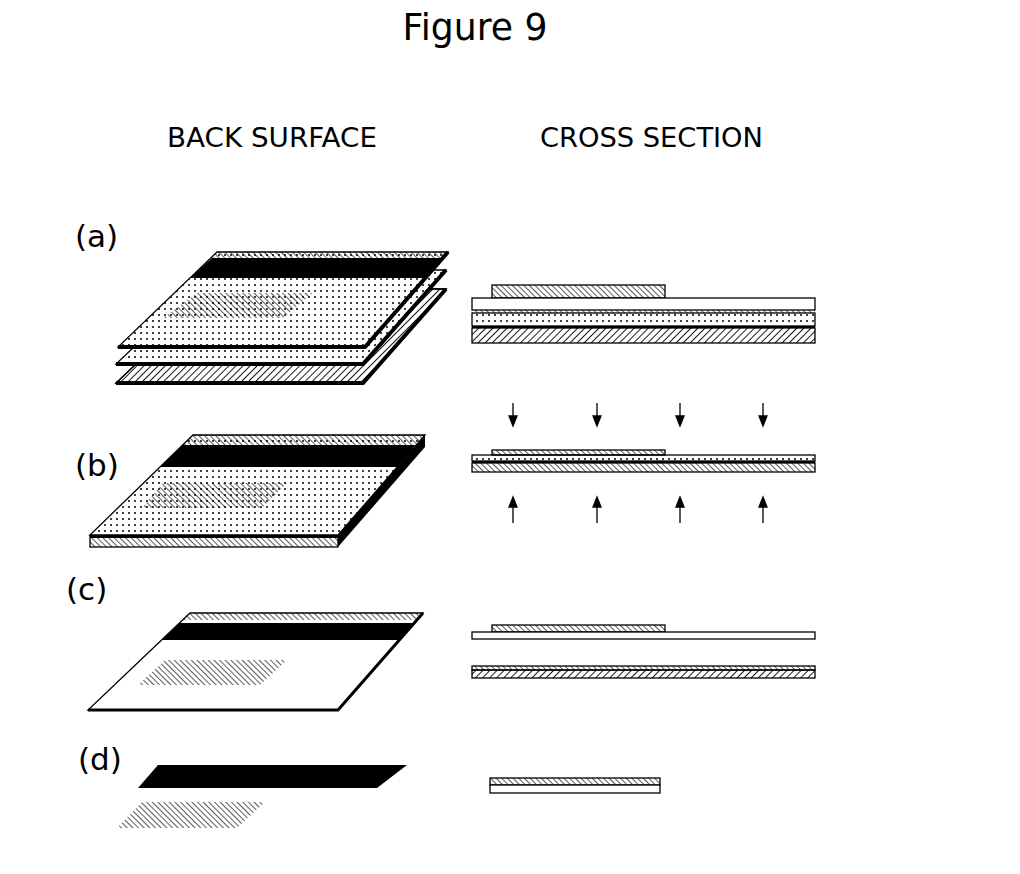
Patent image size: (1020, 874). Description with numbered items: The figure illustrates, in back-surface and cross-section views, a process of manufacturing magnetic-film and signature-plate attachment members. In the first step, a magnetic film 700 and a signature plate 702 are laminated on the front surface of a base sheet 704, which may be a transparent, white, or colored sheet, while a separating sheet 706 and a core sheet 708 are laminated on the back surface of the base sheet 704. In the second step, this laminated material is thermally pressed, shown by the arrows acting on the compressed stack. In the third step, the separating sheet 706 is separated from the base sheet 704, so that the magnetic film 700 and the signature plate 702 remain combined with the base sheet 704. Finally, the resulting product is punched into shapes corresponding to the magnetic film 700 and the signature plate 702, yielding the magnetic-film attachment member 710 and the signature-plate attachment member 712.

The magnetic film 700 is at (380, 262).
The signature plate 702 is at (177, 303).
The base sheet 704 is at (147, 333).
The separating sheet 706 is at (137, 360).
The core sheet 708 is at (243, 383).
The magnetic-film attachment member 710 is at (377, 765).
The signature-plate attachment member 712 is at (147, 829).